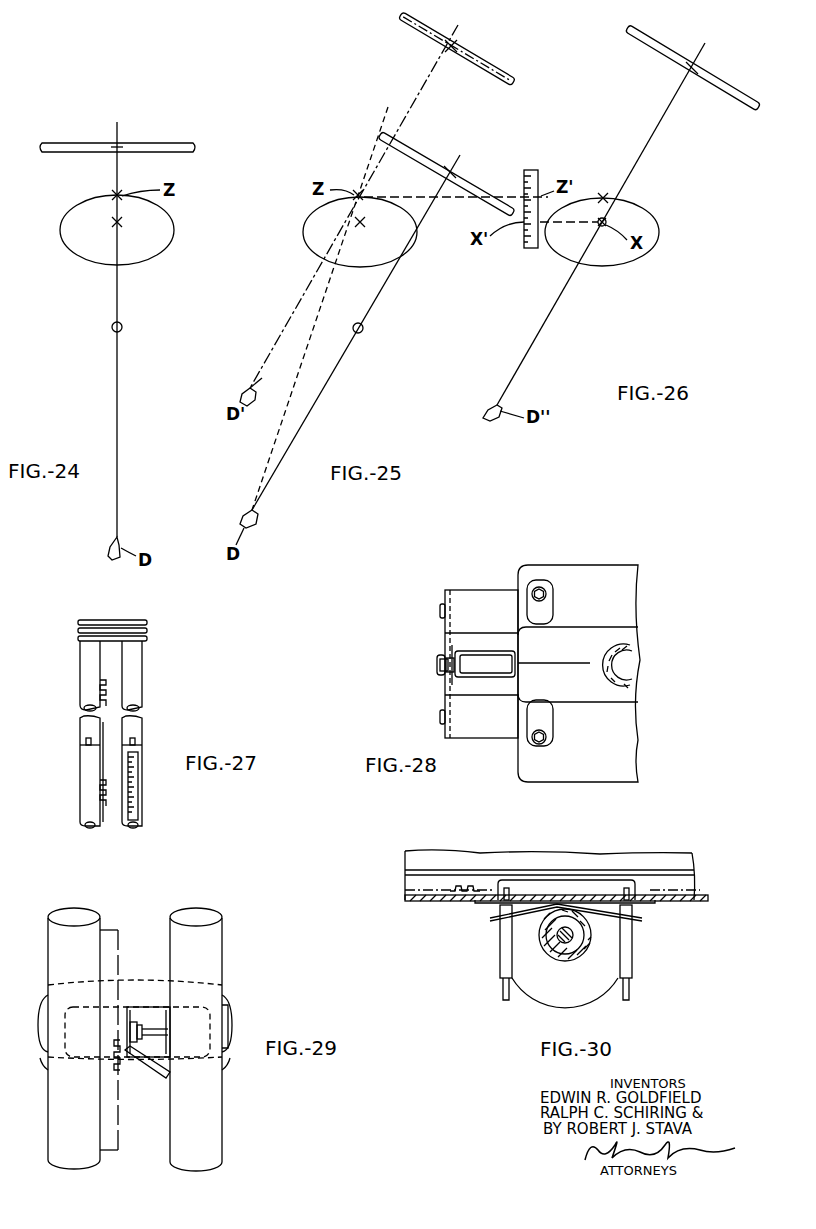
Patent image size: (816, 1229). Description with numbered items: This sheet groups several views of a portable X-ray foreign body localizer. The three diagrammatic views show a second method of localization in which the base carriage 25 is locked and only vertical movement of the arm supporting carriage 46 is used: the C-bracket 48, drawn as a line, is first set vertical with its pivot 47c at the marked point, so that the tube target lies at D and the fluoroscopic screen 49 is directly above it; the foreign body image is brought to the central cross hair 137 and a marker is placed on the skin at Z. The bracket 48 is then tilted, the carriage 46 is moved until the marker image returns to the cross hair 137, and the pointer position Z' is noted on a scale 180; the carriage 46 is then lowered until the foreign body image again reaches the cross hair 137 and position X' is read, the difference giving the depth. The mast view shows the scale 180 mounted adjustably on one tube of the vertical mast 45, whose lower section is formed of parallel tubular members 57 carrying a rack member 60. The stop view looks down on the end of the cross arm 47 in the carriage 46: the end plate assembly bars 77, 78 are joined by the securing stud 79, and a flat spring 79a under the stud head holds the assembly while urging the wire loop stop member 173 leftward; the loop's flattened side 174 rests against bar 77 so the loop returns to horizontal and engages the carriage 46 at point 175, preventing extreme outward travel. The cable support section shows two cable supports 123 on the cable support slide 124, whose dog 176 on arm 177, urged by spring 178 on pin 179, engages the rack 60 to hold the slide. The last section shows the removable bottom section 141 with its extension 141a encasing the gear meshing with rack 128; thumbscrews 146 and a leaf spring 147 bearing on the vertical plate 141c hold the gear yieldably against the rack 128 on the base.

In FIG. 24, the C-bracket 48 is at (118, 392).
In FIG. 25, the C-bracket 48 is at (335, 373).
In FIG. 24, the fluoroscopic screen 49 is at (191, 143).
In FIG. 25, the fluoroscopic screen 49 is at (422, 153).
In FIG. 26, the fluoroscopic screen 49 is at (671, 68).
In FIG. 24, the central cross hair 137 is at (118, 146).
In FIG. 25, the central cross hair 137 is at (458, 41).
In FIG. 26, the central cross hair 137 is at (692, 65).
In FIG. 24, the pivot 47c is at (113, 323).
In FIG. 25, the scale 180 is at (527, 249).
In FIG. 27, the scale 180 is at (135, 800).
In FIG. 27, the vertical mast 45 is at (130, 656).
In FIG. 29, the vertical mast 45 is at (180, 932).
In FIG. 28, the arm supporting carriage 46 is at (567, 572).
In FIG. 28, the cross arm 47 is at (489, 590).
In FIG. 28, the tubular members 57 is at (630, 645).
In FIG. 28, the bar 77 is at (455, 645).
In FIG. 28, the bar 78 is at (445, 626).
In FIG. 28, the securing stud 79 is at (437, 665).
In FIG. 28, the flat spring 79a is at (445, 680).
In FIG. 28, the stop member 173 is at (487, 678).
In FIG. 28, the flattened side 174 is at (450, 652).
In FIG. 28, the point 175 is at (520, 661).
In FIG. 29, the rack member 60 is at (110, 1120).
In FIG. 29, the cable support 123 is at (133, 985).
In FIG. 29, the cable support slide 124 is at (228, 1017).
In FIG. 29, the dog 176 is at (120, 1062).
In FIG. 29, the arm 177 is at (150, 1060).
In FIG. 29, the spring 178 is at (135, 1030).
In FIG. 29, the pin 179 is at (152, 1031).
In FIG. 30, the bottom section 141 is at (555, 950).
In FIG. 30, the extension 141a is at (603, 990).
In FIG. 30, the vertical plate 141c is at (533, 893).
In FIG. 30, the base carriage 25 is at (584, 893).
In FIG. 30, the rack 128 is at (470, 895).
In FIG. 30, the thumbscrews 146 is at (505, 965).
In FIG. 30, the leaf spring 147 is at (640, 919).